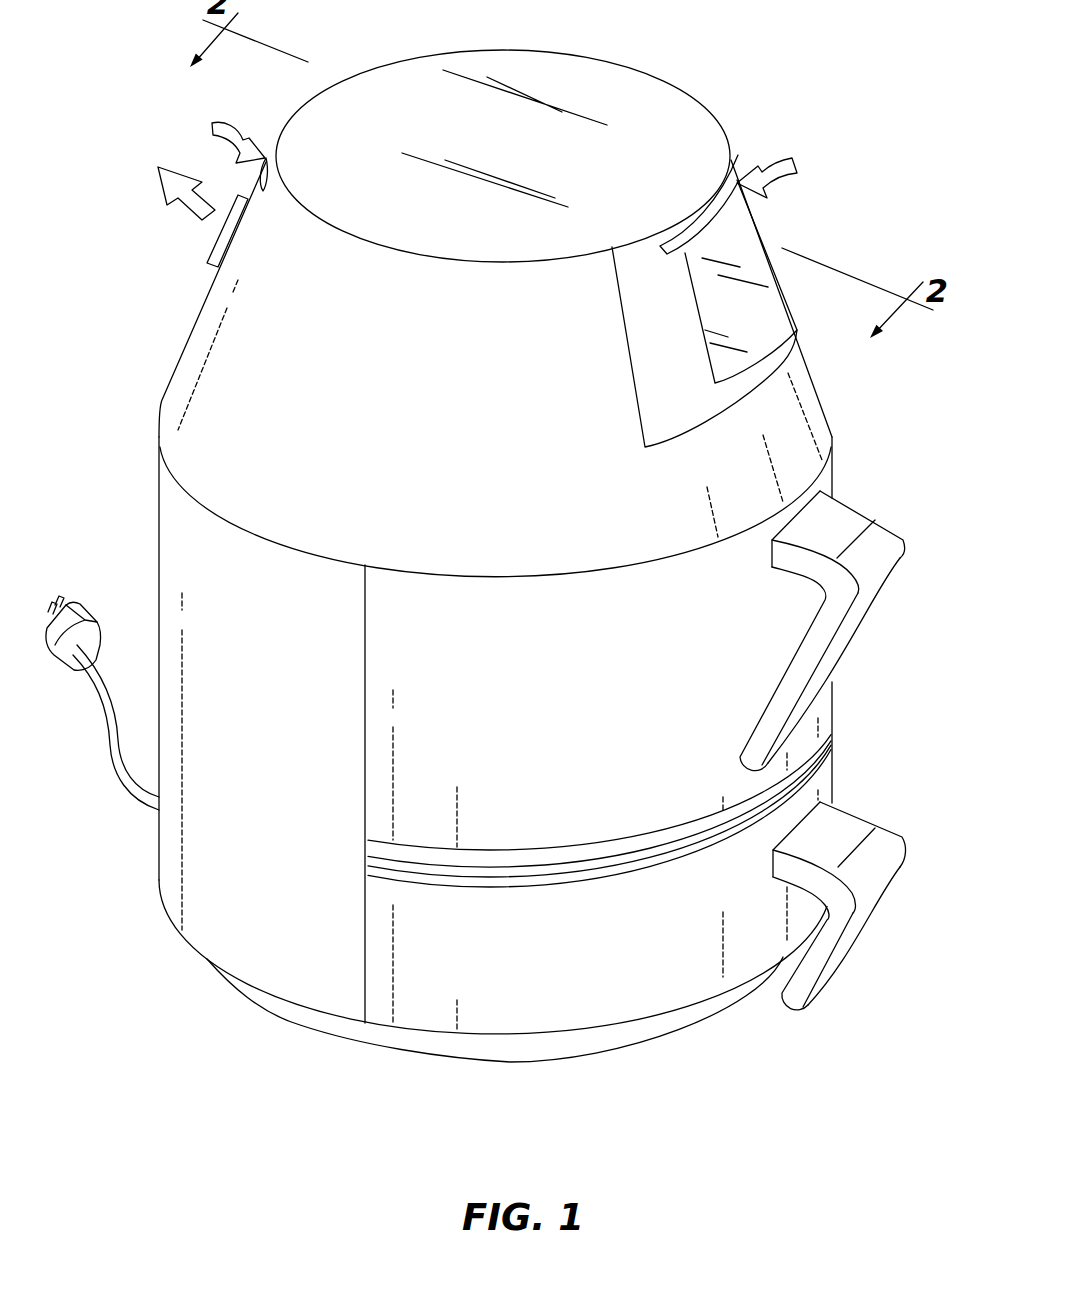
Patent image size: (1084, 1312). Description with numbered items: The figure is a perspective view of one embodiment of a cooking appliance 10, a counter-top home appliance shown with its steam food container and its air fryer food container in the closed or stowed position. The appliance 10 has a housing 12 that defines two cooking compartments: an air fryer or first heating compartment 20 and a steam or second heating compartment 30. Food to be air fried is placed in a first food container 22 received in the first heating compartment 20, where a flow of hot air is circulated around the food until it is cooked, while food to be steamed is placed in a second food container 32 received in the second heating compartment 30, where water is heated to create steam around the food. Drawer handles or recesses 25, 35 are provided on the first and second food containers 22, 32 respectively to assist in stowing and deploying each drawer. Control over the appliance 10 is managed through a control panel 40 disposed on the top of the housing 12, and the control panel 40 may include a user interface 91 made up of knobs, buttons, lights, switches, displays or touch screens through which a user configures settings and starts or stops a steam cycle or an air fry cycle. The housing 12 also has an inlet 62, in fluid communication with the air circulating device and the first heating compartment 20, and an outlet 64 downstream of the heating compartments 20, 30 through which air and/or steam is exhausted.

The cooking appliance 10 is at (96, 185).
The housing 12 is at (130, 578).
The first heating compartment 20 is at (538, 730).
The first food container 22 is at (740, 673).
The drawer handle 25 is at (874, 543).
The second heating compartment 30 is at (493, 993).
The second food container 32 is at (684, 962).
The drawer handle 35 is at (885, 847).
The control panel 40 is at (815, 294).
The inlet 62 is at (264, 158).
The outlet 64 is at (207, 251).
The user interface 91 is at (740, 260).